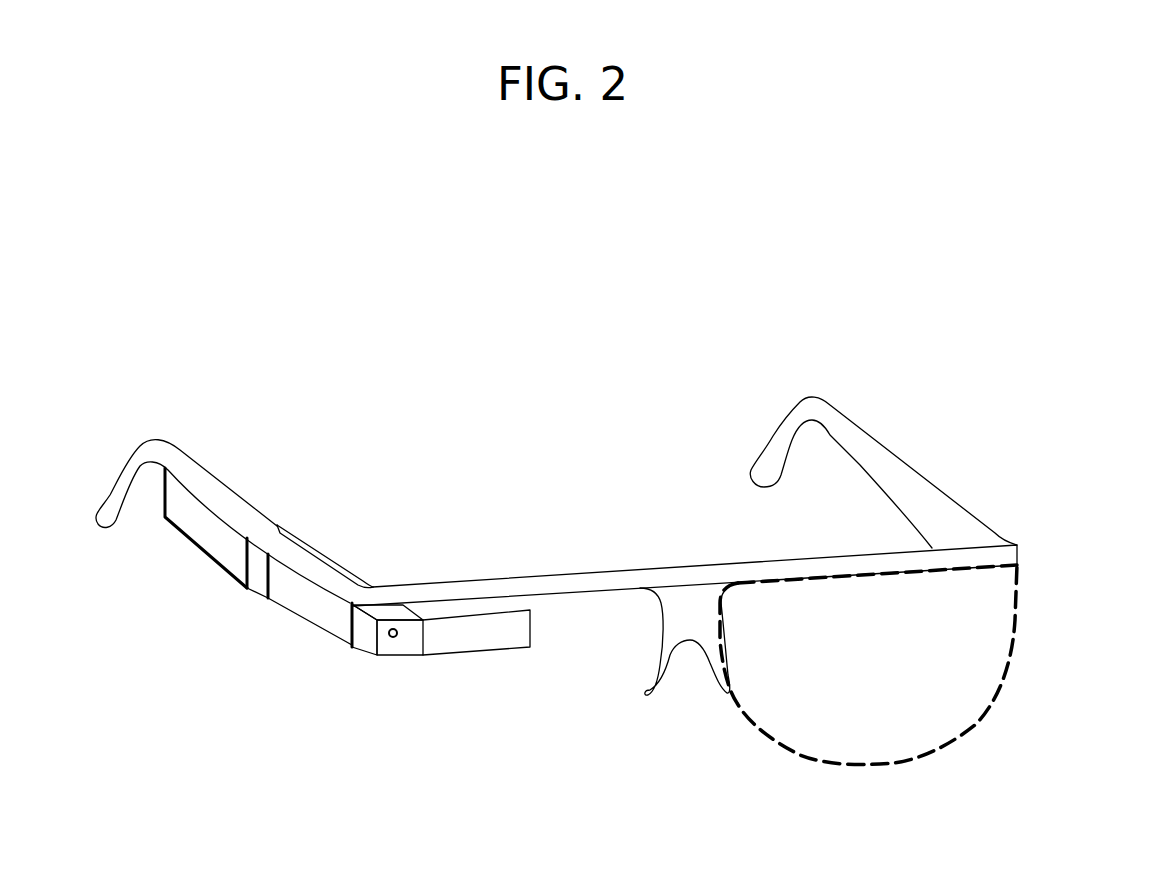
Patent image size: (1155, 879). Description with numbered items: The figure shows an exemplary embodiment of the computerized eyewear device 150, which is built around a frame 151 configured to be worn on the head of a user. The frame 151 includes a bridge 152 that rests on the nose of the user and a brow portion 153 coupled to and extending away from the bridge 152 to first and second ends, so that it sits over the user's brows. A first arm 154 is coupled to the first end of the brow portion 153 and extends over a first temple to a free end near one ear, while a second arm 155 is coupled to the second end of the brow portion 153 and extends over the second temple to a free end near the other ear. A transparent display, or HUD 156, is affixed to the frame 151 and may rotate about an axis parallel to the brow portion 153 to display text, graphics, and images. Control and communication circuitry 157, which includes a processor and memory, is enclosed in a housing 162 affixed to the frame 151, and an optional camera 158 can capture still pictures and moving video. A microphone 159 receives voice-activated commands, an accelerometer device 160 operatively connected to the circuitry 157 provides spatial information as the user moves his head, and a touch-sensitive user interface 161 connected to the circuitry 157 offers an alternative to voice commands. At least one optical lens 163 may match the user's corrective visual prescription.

The computerized eyewear device 150 is at (408, 358).
The frame 151 is at (984, 484).
The bridge 152 is at (722, 644).
The brow portion 153 is at (578, 580).
The first arm 154 is at (218, 486).
The second arm 155 is at (871, 458).
The transparent display (HUD) 156 is at (493, 649).
The control and communication circuitry 157 is at (284, 606).
The camera 158 is at (393, 638).
The microphone 159 is at (262, 583).
The accelerometer device 160 is at (365, 645).
The touch-sensitive user interface (TSUI) 161 is at (215, 504).
The housing 162 is at (312, 553).
The optical lens 163 is at (953, 747).